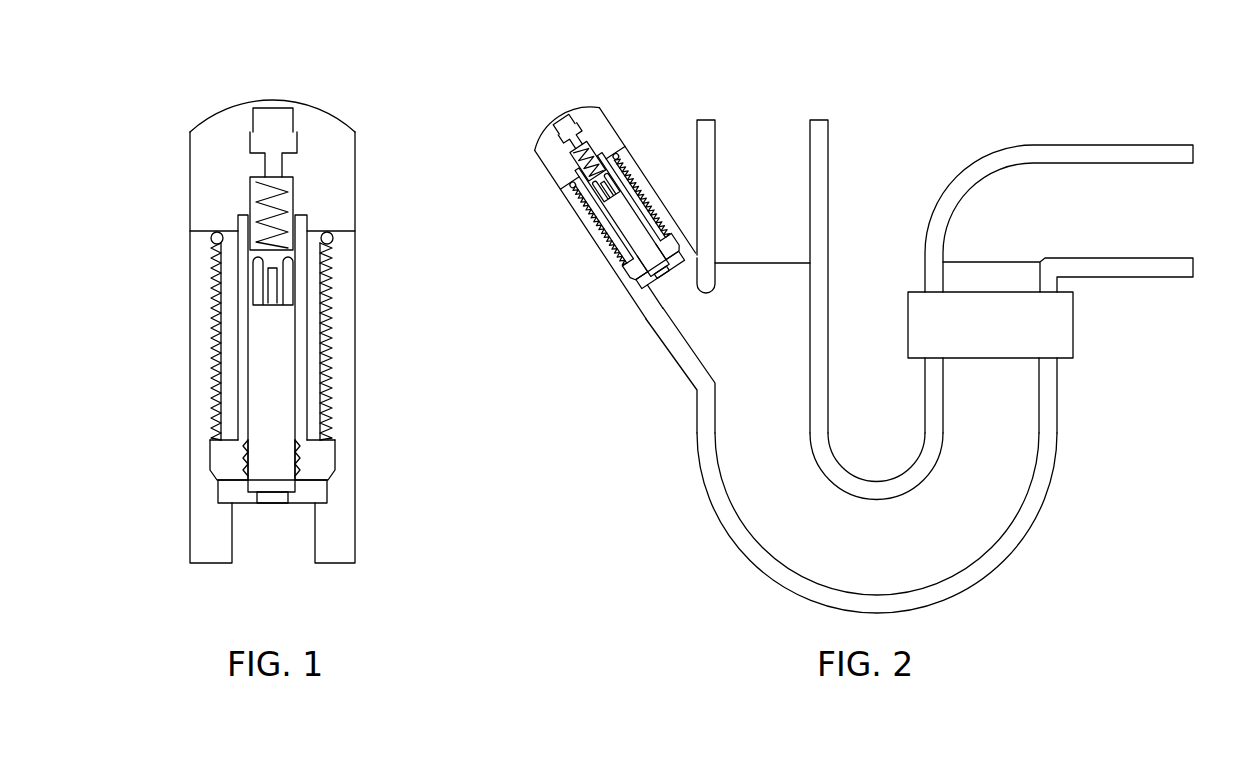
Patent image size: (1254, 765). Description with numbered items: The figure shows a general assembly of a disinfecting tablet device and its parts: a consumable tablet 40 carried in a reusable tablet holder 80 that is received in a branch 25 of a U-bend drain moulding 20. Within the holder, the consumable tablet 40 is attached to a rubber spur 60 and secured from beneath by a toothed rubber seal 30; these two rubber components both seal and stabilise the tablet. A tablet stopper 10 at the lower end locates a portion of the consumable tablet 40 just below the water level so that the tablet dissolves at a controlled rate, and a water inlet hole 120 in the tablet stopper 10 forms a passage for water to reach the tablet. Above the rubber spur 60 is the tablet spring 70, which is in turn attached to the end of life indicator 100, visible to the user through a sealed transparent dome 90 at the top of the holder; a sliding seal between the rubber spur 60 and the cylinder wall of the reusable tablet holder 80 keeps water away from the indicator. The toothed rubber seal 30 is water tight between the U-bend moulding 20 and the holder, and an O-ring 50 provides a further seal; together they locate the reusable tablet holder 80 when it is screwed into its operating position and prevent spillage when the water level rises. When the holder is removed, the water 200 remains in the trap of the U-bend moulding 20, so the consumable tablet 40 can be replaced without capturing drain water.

In FIG. 1, the tablet stopper 10 is at (230, 488).
In FIG. 2, the U-bend moulding 20 is at (987, 560).
In FIG. 2, the branch 25 is at (675, 352).
In FIG. 1, the toothed rubber seal 30 is at (300, 464).
In FIG. 1, the consumable tablet 40 is at (260, 387).
In FIG. 1, the O-ring 50 is at (210, 237).
In FIG. 1, the rubber spur 60 is at (333, 238).
In FIG. 1, the tablet spring 70 is at (297, 207).
In FIG. 1, the reusable tablet holder 80 is at (210, 188).
In FIG. 1, the transparent dome 90 is at (223, 117).
In FIG. 1, the end of life indicator 100 is at (272, 110).
In FIG. 1, the water inlet hole 120 is at (277, 498).
In FIG. 2, the water 200 is at (897, 556).